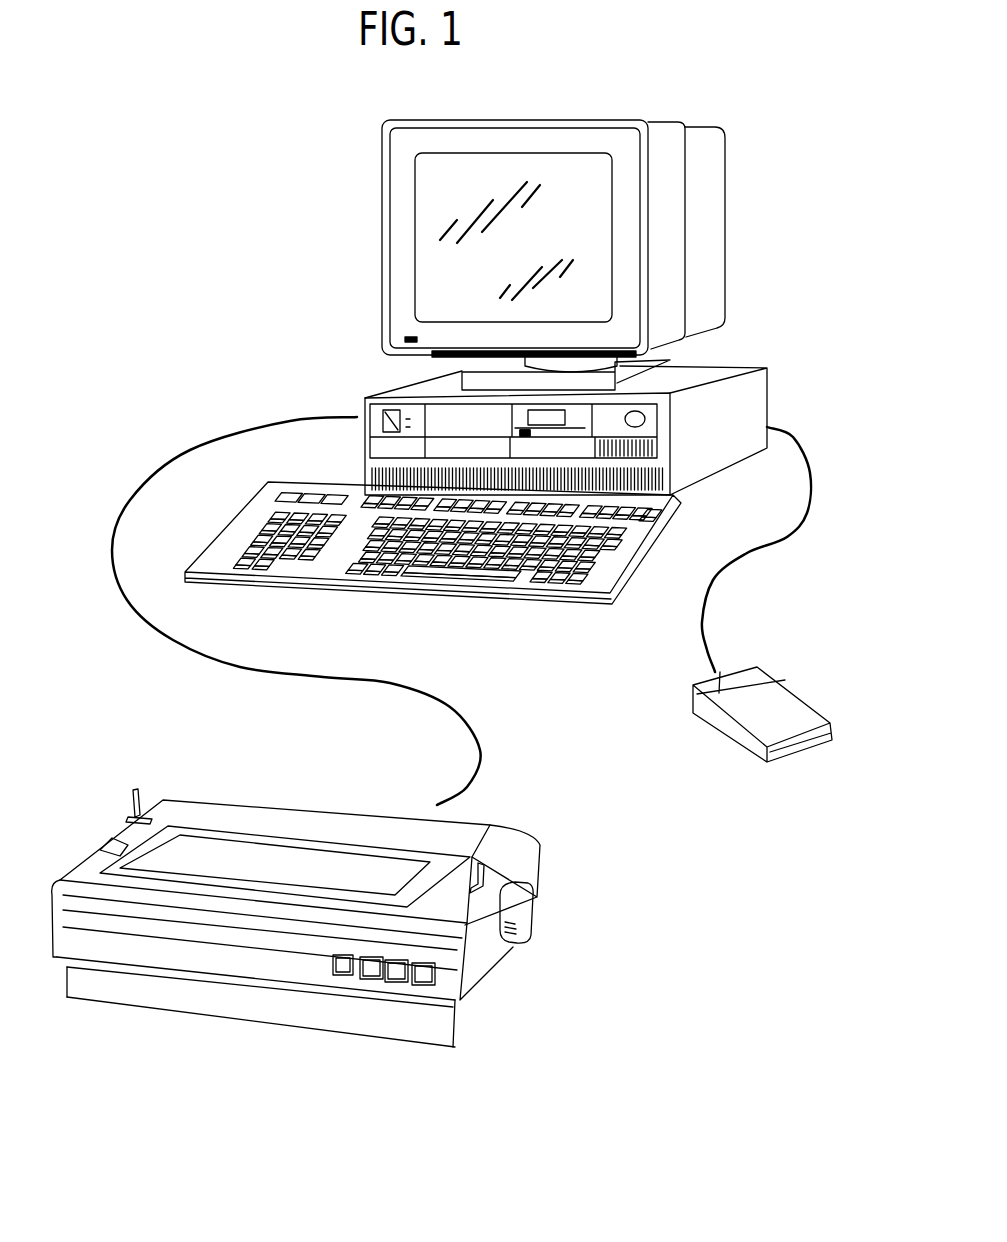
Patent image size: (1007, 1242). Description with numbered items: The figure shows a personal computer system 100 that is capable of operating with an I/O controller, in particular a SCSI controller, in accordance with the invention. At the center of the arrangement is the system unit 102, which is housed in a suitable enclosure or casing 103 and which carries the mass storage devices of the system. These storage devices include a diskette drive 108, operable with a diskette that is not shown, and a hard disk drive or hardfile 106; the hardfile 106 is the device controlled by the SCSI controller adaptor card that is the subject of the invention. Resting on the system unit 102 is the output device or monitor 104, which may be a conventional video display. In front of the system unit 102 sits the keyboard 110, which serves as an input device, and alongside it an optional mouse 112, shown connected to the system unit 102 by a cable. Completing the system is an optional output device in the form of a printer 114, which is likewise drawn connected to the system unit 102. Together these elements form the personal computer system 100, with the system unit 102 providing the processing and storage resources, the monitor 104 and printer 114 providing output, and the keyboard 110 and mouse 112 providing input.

The personal computer system 100 is at (237, 281).
The system unit 102 is at (673, 428).
The casing 103 is at (714, 375).
The monitor 104 is at (726, 172).
The hardfile 106 is at (470, 418).
The diskette drive 108 is at (575, 418).
The keyboard 110 is at (547, 604).
The mouse 112 is at (805, 703).
The printer 114 is at (290, 793).